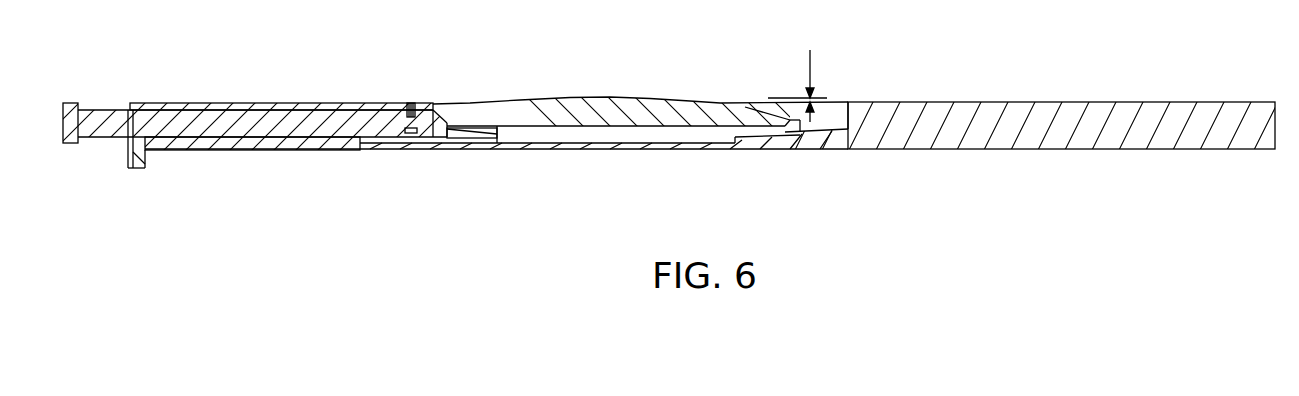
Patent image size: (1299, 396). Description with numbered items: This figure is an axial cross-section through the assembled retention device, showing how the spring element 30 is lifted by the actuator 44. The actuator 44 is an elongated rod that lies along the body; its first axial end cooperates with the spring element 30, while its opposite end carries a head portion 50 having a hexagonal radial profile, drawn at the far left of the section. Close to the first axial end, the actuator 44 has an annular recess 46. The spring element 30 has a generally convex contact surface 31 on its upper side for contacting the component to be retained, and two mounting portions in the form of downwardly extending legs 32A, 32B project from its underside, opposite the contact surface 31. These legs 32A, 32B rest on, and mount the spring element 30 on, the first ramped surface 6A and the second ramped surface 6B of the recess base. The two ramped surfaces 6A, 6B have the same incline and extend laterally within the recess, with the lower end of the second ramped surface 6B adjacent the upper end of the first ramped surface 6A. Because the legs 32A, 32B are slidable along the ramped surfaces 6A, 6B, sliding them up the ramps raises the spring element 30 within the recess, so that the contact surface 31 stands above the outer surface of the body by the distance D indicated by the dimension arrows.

The actuator 44 is at (102, 138).
The head portion 50 is at (73, 103).
The annular recess 46 is at (408, 104).
The first ramped surface 6A is at (436, 139).
The leg 32A is at (452, 132).
The spring element 30 is at (553, 127).
The contact surface 31 is at (623, 97).
The second ramped surface 6B is at (742, 148).
The leg 32B is at (776, 135).
The distance D is at (797, 80).